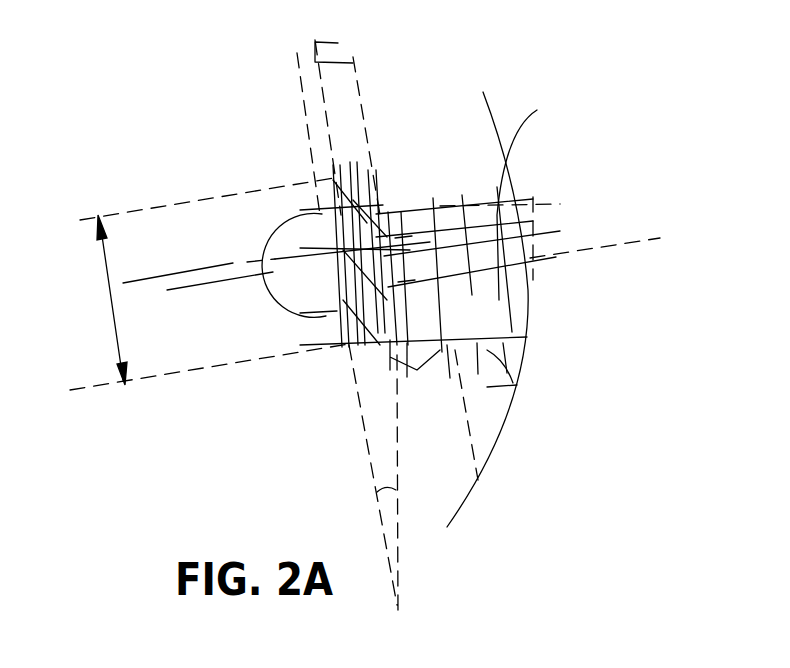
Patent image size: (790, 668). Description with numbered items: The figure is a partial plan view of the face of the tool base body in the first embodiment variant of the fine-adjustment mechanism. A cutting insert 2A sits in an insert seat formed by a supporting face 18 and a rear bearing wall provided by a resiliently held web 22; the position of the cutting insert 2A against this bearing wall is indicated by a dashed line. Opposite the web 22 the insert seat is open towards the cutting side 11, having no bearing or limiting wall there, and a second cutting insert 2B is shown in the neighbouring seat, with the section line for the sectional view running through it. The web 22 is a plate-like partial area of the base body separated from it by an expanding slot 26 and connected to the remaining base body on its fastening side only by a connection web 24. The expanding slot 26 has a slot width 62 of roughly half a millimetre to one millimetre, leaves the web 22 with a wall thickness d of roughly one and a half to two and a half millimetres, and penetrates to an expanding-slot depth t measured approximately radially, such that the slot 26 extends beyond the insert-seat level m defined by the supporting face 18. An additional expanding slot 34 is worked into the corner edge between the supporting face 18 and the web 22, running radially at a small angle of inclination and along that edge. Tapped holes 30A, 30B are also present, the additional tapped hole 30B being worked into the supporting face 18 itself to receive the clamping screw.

The cutting side 11 is at (652, 146).
The slot width 62 is at (292, 50).
The wall thickness d is at (345, 57).
The web 22 is at (347, 163).
The additional expanding slot 34 is at (400, 312).
The cutting insert 2A is at (533, 204).
The supporting face 18 is at (509, 307).
The expanding slot 26 is at (343, 230).
The tapped hole 30A is at (287, 242).
The cutting insert 2B is at (185, 287).
The expanding-slot depth t is at (107, 303).
The insert-seat level m is at (594, 251).
The connection web 24 is at (357, 350).
The additional tapped hole 30B is at (523, 387).